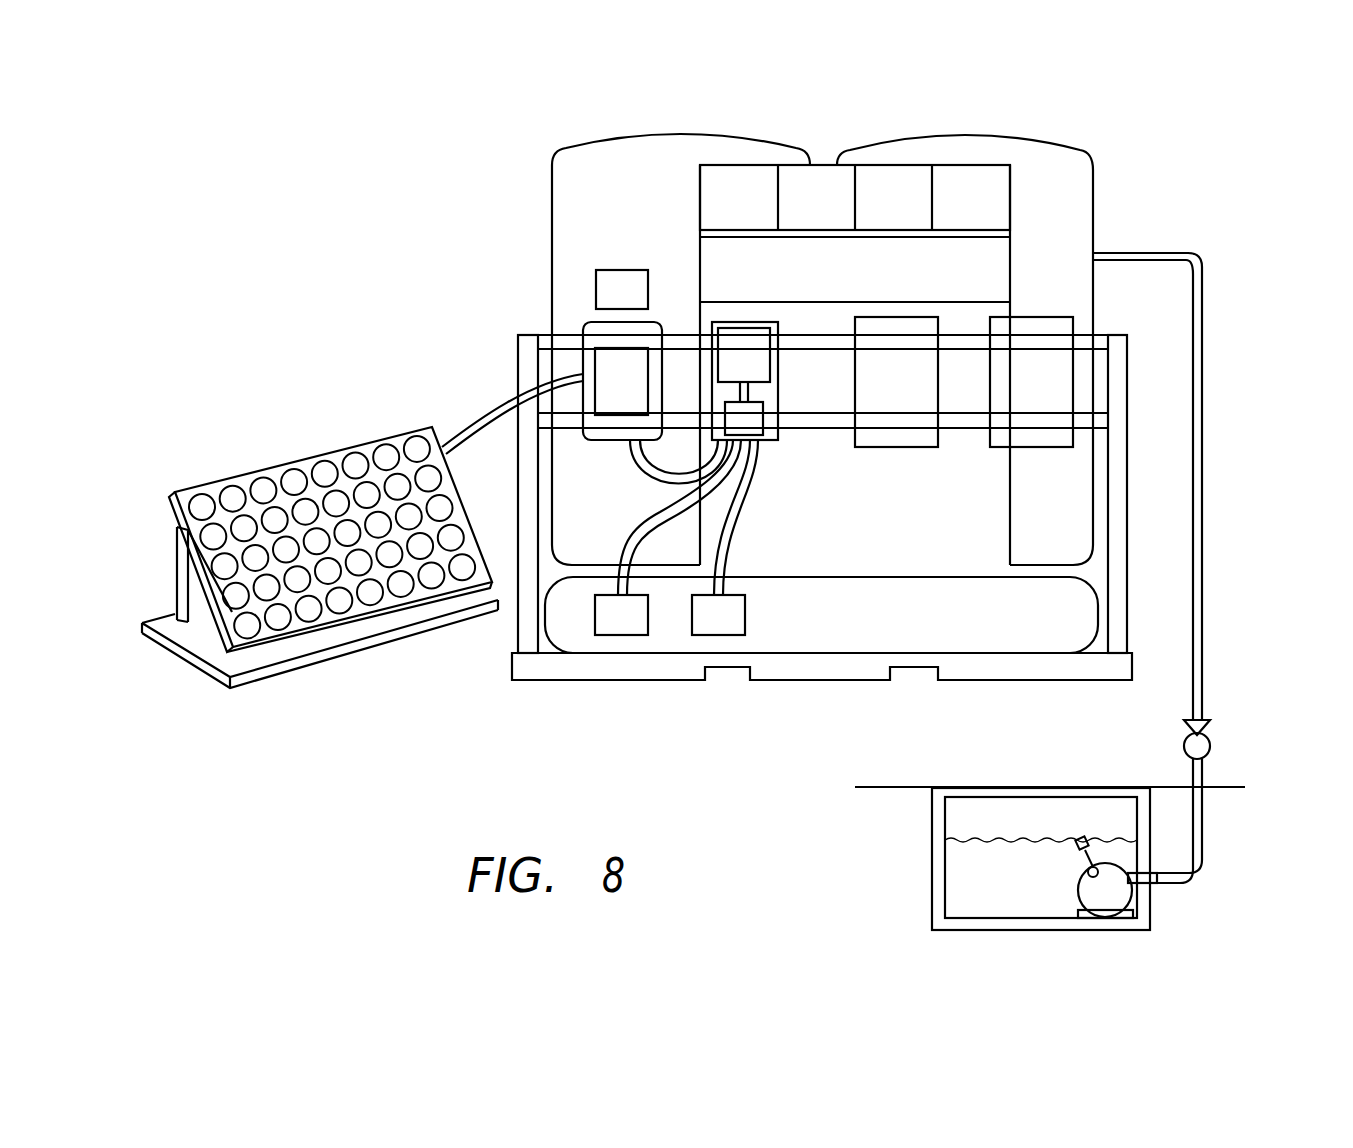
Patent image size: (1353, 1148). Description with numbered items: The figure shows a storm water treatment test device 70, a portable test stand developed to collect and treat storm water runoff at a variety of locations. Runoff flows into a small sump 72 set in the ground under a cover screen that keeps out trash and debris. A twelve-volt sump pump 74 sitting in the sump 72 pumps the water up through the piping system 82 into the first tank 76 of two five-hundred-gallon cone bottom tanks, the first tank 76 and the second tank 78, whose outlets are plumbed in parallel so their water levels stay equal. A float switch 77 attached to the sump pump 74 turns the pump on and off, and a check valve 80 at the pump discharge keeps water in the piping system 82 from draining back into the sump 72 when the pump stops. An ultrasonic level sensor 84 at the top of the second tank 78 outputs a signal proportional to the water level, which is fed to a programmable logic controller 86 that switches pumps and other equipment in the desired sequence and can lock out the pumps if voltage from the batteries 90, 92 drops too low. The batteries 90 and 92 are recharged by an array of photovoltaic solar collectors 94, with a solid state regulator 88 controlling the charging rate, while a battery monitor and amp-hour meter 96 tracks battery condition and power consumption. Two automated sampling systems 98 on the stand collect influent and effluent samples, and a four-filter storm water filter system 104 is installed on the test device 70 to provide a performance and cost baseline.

The storm water treatment test device 70 is at (480, 305).
The sump 72 is at (928, 833).
The sump pump 74 is at (1115, 895).
The first tank 76 is at (1065, 142).
The float switch 77 is at (1083, 838).
The second tank 78 is at (590, 146).
The check valve 80 is at (1210, 742).
The piping system 82 is at (1197, 300).
The ultrasonic level sensor 84 is at (618, 272).
The programmable logic controller 86 is at (592, 358).
The solid state regulator 88 is at (765, 408).
The battery 90 is at (724, 637).
The battery 92 is at (628, 637).
The photovoltaic solar collectors 94 is at (360, 441).
The battery monitor and amp-hour meter 96 is at (748, 322).
The automated sampling system 98 is at (883, 389).
The storm water filter system 104 is at (1020, 192).